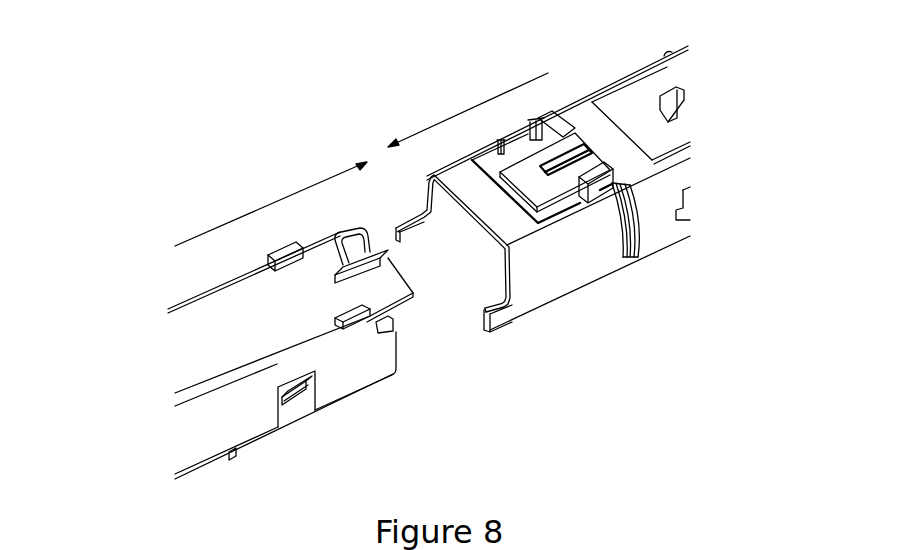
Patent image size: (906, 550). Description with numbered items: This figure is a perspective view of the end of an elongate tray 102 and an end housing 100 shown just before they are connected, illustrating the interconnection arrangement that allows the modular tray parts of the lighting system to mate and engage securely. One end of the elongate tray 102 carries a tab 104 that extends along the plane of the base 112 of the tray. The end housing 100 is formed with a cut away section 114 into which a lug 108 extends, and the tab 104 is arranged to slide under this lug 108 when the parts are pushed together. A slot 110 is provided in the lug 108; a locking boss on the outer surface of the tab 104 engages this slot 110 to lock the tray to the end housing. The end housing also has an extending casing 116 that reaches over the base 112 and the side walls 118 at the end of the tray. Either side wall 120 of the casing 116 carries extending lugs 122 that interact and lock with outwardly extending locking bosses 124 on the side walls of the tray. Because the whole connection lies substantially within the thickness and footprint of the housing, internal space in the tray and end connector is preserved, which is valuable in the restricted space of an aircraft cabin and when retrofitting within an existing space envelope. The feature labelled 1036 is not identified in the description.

The end housing 100 is at (168, 273).
The elongate tray 102 is at (645, 283).
The tab 104 is at (408, 298).
The lug 108 is at (542, 158).
The slot 110 is at (603, 158).
The base 112 is at (197, 352).
The cut away section 114 is at (500, 150).
The extending casing 116 is at (451, 261).
The side walls 118 is at (203, 442).
The side wall 120 is at (563, 262).
The extending lugs 122 is at (502, 313).
The locking bosses 124 is at (297, 395).
The latch block 1036 is at (340, 262).